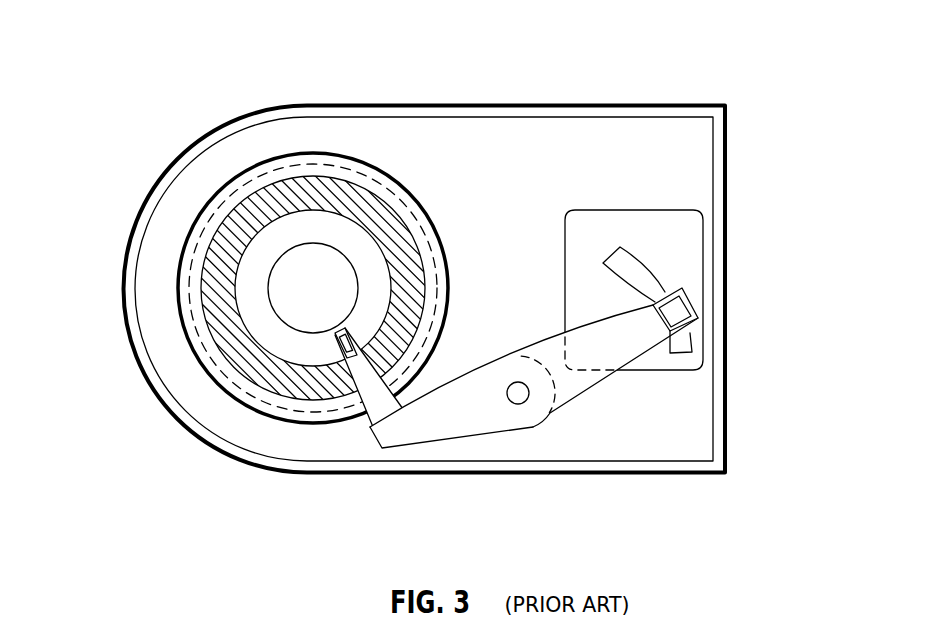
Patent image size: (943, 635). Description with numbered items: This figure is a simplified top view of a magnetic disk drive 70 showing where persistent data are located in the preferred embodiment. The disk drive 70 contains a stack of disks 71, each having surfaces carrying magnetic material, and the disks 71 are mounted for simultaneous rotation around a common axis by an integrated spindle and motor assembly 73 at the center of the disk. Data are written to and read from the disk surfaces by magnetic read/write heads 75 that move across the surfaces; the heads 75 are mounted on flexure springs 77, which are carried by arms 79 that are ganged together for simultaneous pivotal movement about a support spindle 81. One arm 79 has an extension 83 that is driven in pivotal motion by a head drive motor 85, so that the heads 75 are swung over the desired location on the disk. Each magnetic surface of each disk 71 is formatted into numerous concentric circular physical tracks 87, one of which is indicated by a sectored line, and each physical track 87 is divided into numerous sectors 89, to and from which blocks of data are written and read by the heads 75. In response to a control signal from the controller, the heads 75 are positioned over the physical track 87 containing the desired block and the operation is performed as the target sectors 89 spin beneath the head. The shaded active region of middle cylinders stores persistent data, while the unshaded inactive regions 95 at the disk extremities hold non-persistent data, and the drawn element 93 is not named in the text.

The disk drive 70 is at (597, 50).
The disks 71 is at (187, 212).
The integrated spindle and motor assembly 73 is at (270, 307).
The magnetic read/write heads 75 is at (340, 335).
The flexure springs 77 is at (377, 403).
The arms 79 is at (453, 427).
The support spindle 81 is at (518, 404).
The extension 83 is at (620, 347).
The head drive motor 85 is at (682, 238).
The physical tracks 87 is at (383, 188).
The sectors 89 is at (300, 163).
The disk 93 is at (197, 303).
The inactive regions 95 is at (248, 272).